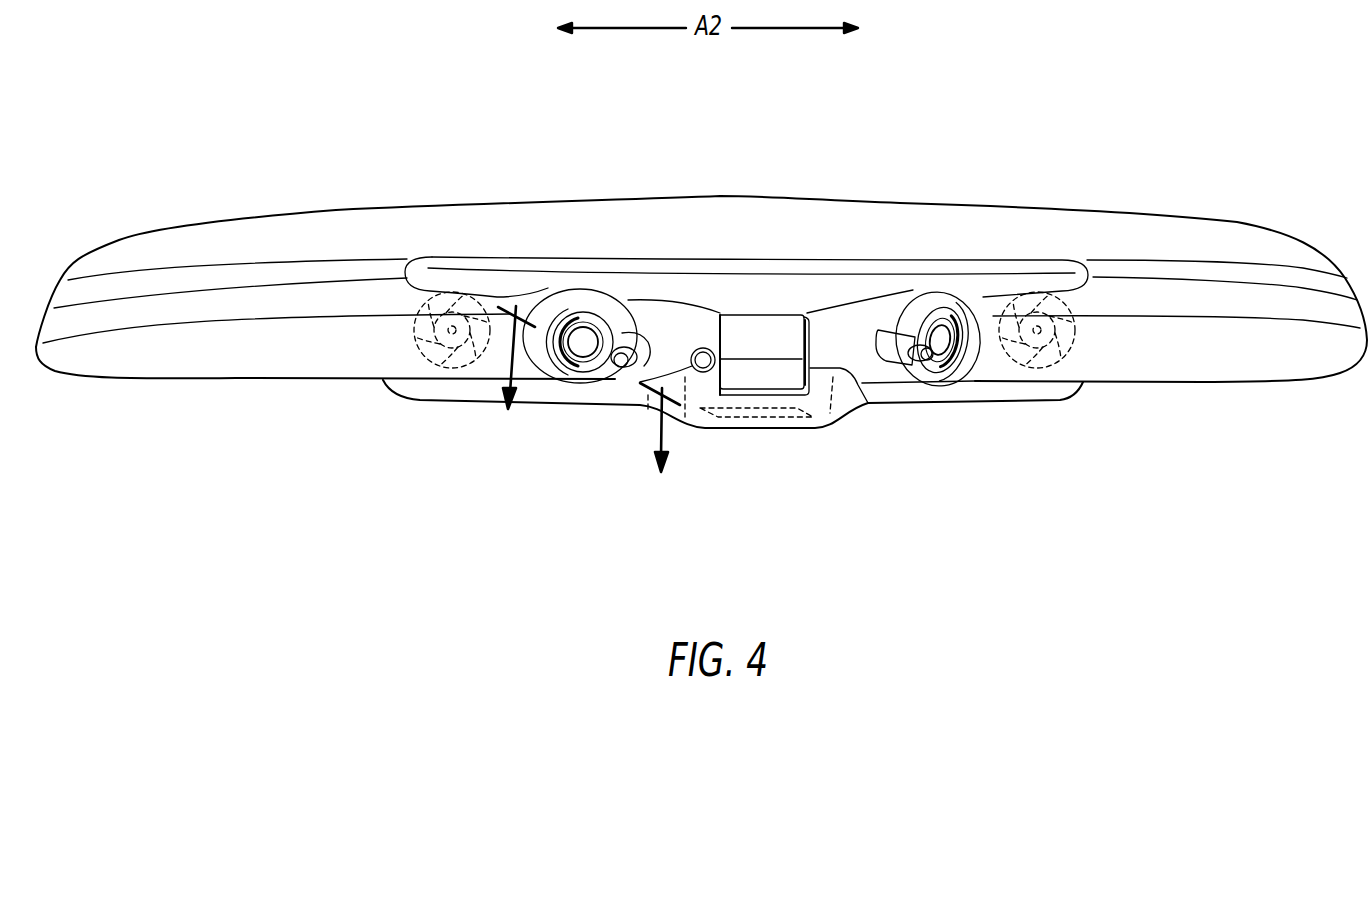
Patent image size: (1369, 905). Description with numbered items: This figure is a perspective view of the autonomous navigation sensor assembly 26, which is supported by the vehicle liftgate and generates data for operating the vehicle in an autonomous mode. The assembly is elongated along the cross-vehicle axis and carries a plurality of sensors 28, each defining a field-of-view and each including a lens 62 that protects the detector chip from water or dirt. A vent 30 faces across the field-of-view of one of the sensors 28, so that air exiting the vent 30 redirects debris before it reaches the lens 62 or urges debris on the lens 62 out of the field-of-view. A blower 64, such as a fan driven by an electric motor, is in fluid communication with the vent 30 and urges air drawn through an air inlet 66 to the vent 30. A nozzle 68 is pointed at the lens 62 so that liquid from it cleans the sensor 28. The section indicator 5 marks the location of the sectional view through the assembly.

The overhead console 26 is at (500, 130).
The light module 28 is at (586, 338).
The housing 30 is at (550, 357).
The lens 62 is at (587, 353).
The fan 64 is at (440, 357).
The slot 66 is at (750, 418).
The button 68 is at (610, 367).
The section line 5- 5 is at (586, 412).